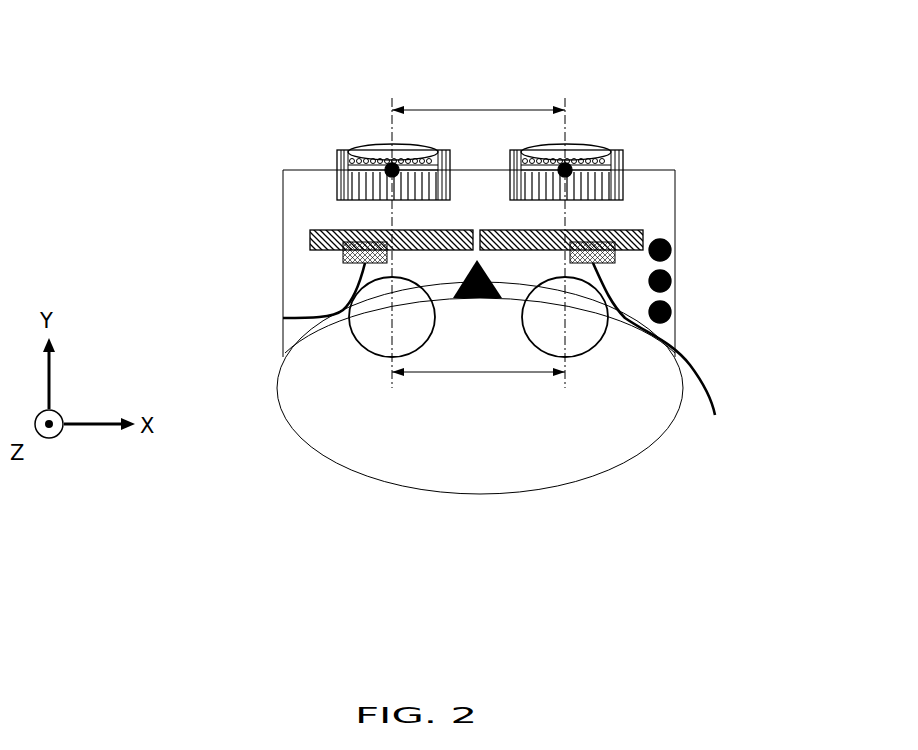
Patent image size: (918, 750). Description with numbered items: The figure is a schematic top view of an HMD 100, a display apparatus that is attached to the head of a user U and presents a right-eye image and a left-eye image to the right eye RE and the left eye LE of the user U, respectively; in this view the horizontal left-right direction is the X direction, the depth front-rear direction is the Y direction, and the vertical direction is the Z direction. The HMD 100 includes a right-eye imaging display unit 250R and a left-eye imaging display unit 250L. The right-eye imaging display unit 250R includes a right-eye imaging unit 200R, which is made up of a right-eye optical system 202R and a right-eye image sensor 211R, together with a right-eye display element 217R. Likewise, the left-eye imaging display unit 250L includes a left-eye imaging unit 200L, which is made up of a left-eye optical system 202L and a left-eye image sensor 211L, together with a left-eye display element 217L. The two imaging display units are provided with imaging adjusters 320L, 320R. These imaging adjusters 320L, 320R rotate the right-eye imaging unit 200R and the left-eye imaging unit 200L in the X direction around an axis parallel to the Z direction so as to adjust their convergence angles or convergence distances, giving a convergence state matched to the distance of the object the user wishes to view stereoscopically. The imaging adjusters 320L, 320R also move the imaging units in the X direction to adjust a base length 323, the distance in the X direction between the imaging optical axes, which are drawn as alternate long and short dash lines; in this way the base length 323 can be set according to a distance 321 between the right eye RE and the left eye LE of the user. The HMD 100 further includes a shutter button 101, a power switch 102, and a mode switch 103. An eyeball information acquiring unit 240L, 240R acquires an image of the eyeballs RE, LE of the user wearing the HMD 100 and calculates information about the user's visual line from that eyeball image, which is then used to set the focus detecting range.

The HMD 100 is at (303, 170).
The left-eye imaging unit 200L is at (337, 162).
The right-eye imaging unit 200R is at (623, 162).
The left-eye optical system 202L is at (356, 152).
The right-eye optical system 202R is at (603, 152).
The imaging adjuster 320L is at (390, 168).
The imaging adjuster 320R is at (567, 168).
The base length 323 is at (478, 108).
The left-eye image sensor 211L is at (338, 182).
The right-eye image sensor 211R is at (622, 180).
The left-eye imaging display unit 250L is at (325, 210).
The right-eye imaging display unit 250R is at (652, 203).
The left-eye display element 217L is at (343, 256).
The right-eye display element 217R is at (617, 258).
The eyeball information acquiring unit 240L is at (283, 318).
The eyeball information acquiring unit 240R is at (672, 357).
The shutter button 101 is at (671, 248).
The power switch 102 is at (671, 279).
The mode switch 103 is at (671, 311).
The distance between the right eye and left eye 321 is at (466, 374).
The left eye LE is at (363, 352).
The right eye RE is at (597, 343).
The user U is at (492, 480).